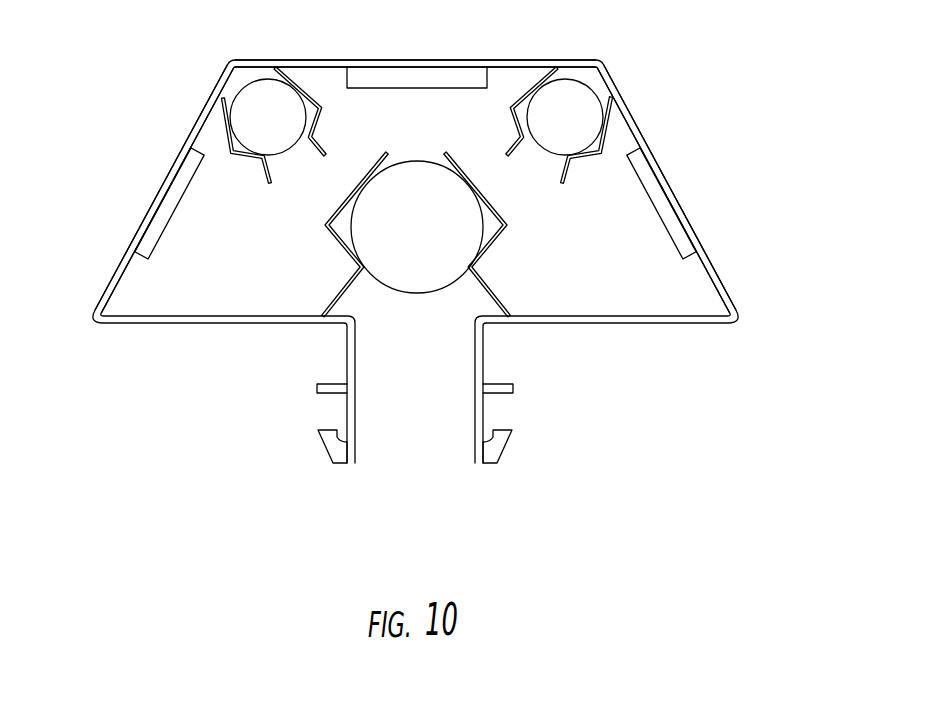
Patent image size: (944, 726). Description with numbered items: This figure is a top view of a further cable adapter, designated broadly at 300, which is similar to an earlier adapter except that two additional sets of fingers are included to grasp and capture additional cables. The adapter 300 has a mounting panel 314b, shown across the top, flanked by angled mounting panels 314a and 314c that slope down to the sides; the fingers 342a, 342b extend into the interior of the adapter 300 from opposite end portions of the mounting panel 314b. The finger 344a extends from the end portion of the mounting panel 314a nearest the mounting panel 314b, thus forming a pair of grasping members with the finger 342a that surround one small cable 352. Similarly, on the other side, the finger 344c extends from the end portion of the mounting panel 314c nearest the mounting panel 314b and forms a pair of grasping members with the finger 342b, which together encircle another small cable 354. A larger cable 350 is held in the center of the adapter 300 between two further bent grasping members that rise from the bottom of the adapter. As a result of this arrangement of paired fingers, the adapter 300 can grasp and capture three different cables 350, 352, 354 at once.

The adapter 300 is at (758, 282).
The mounting panel 314a is at (110, 272).
The mounting panel 314b is at (517, 60).
The second side wall 314c is at (622, 92).
The finger 342a is at (307, 88).
The finger 342b is at (537, 82).
The finger 344a is at (217, 133).
The fourth retaining arm 344c is at (612, 135).
The cable 350 is at (418, 295).
The cable 352 is at (262, 79).
The cable 354 is at (582, 68).